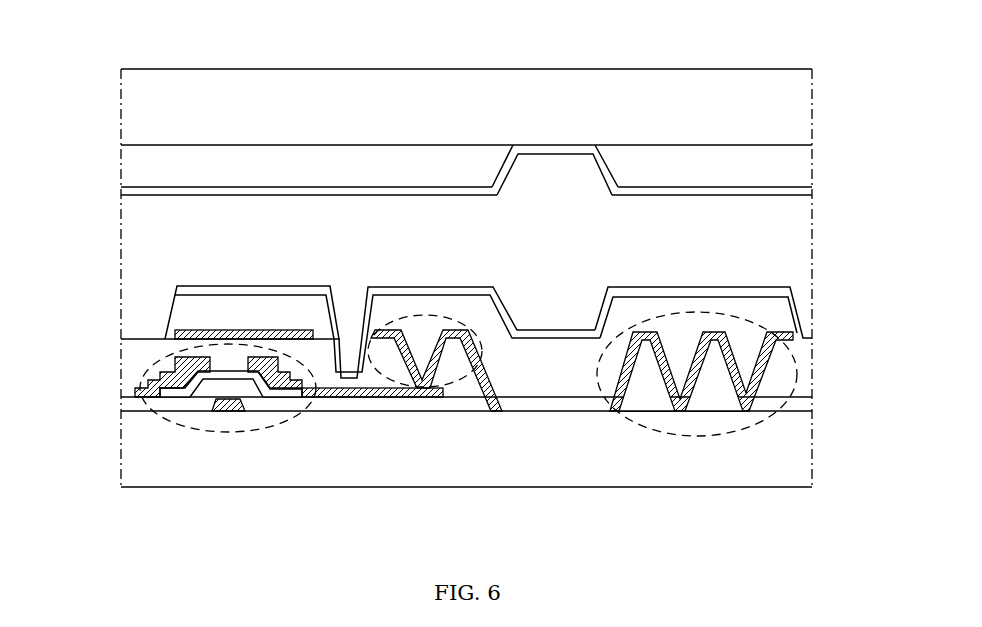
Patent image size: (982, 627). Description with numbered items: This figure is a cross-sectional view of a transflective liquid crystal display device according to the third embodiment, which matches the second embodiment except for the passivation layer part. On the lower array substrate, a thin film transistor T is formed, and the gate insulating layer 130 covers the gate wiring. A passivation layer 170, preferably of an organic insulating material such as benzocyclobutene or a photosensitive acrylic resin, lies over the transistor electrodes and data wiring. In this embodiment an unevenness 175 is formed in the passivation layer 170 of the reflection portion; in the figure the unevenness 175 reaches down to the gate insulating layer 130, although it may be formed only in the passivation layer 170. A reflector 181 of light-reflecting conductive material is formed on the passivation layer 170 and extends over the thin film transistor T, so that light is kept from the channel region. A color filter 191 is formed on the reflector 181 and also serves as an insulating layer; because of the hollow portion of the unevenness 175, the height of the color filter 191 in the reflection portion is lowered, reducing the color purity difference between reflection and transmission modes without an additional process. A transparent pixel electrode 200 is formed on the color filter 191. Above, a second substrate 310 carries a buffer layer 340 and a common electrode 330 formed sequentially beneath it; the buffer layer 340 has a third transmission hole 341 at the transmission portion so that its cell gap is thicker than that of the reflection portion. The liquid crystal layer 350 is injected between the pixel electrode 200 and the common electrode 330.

The second substrate 310 is at (459, 84).
The common electrode 330 is at (358, 193).
The buffer layer 340 is at (247, 157).
The third transmission hole 341 is at (558, 188).
The liquid crystal layer 350 is at (780, 240).
The pixel electrode 200 is at (645, 287).
The color filter 191 is at (268, 307).
The reflector 181 is at (217, 330).
The unevenness 175 is at (427, 313).
The passivation layer 170 is at (135, 355).
The gate insulating layer 130 is at (428, 405).
The thin film transistor T is at (227, 432).